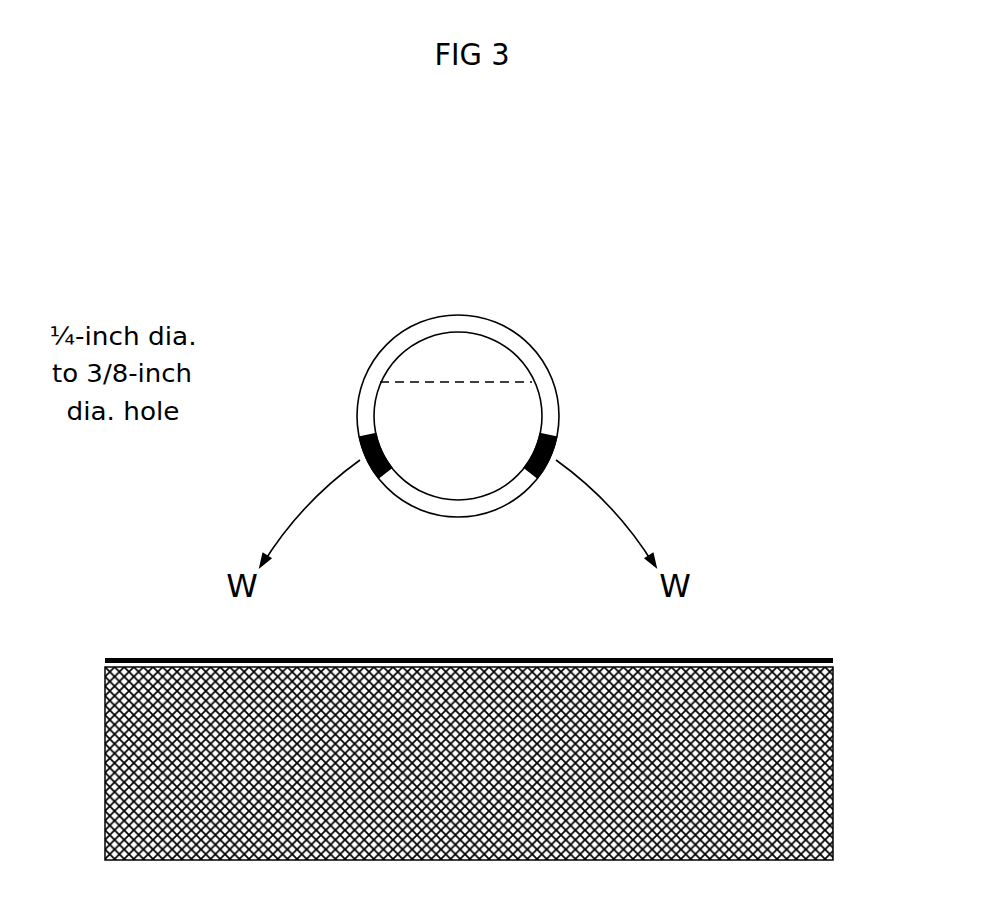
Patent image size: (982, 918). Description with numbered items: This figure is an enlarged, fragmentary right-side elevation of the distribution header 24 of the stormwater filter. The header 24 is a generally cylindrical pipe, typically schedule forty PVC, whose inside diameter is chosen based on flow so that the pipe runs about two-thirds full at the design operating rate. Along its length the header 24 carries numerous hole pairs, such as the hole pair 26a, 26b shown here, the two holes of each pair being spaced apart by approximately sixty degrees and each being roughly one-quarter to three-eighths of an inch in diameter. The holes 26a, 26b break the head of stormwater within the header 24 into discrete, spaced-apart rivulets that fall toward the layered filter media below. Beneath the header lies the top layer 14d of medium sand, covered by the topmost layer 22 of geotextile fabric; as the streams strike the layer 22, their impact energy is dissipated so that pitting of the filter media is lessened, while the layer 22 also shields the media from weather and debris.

The distribution header 24 is at (465, 317).
The hole 26a is at (361, 436).
The hole 26b is at (556, 440).
The topmost layer of fabric 22 is at (700, 658).
The top layer of medium sand 14d is at (790, 773).